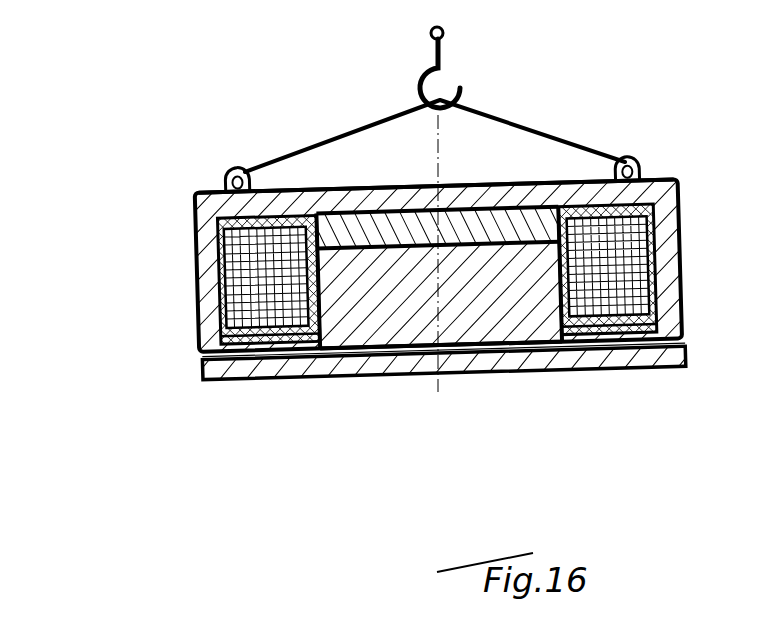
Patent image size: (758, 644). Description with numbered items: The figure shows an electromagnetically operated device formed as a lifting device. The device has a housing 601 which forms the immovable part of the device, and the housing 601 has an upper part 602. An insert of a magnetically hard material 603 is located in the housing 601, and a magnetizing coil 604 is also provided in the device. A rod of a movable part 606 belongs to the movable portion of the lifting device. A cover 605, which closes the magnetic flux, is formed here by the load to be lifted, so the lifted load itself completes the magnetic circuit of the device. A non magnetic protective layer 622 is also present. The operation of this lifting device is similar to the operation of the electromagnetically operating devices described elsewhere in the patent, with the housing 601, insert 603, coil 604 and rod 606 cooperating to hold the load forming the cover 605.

The housing 601 is at (212, 272).
The upper part 602 is at (468, 198).
The insert of a magnetically hard material 603 is at (368, 230).
The magnetizing coil 604 is at (592, 257).
The cover 605 is at (605, 452).
The rod of a movable part 606 is at (380, 317).
The non magnetic protective layer 622 is at (612, 333).